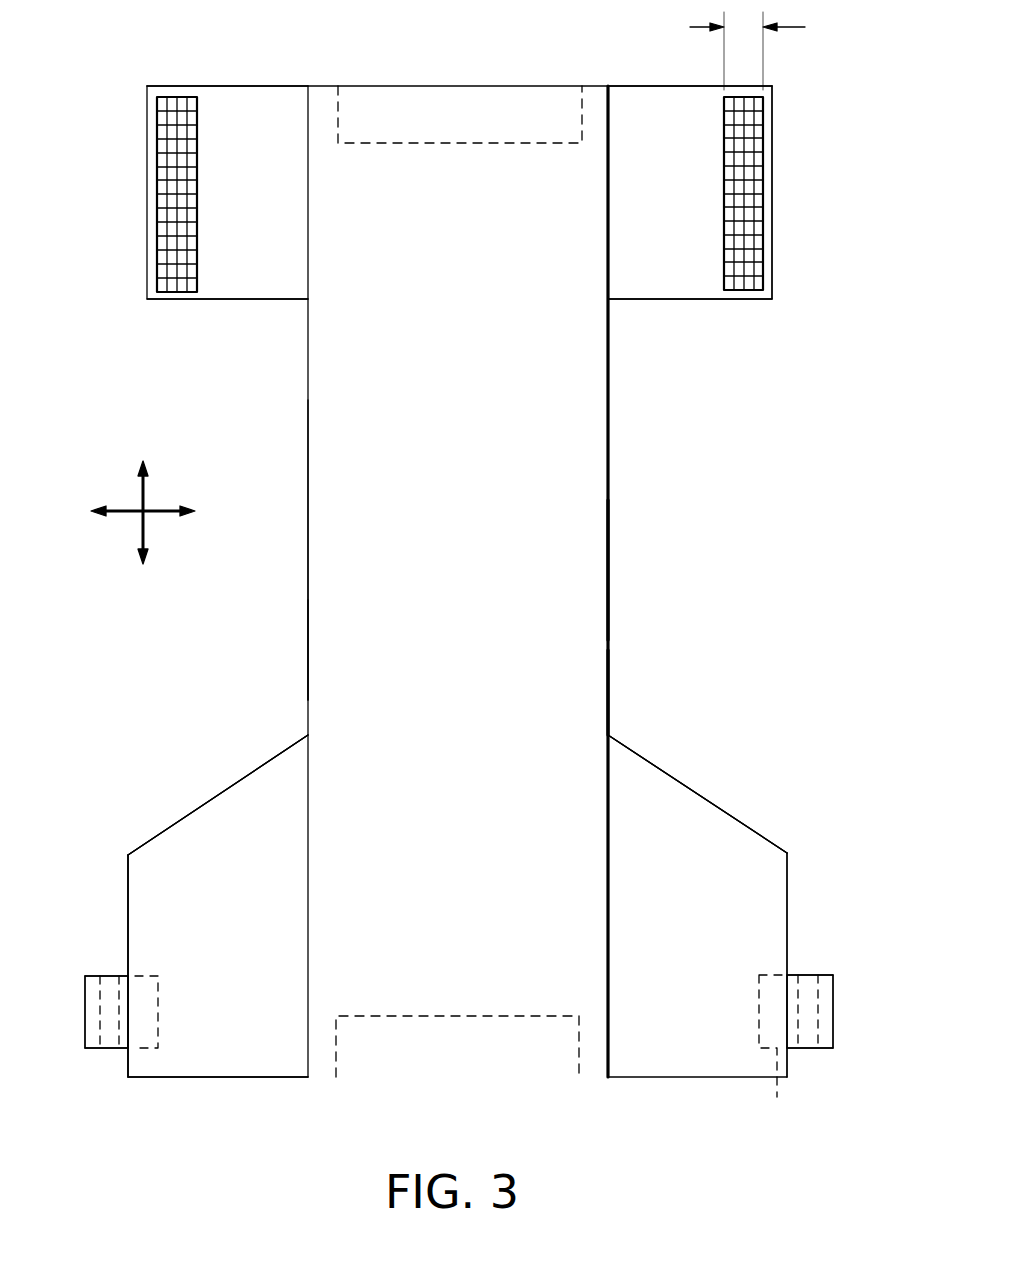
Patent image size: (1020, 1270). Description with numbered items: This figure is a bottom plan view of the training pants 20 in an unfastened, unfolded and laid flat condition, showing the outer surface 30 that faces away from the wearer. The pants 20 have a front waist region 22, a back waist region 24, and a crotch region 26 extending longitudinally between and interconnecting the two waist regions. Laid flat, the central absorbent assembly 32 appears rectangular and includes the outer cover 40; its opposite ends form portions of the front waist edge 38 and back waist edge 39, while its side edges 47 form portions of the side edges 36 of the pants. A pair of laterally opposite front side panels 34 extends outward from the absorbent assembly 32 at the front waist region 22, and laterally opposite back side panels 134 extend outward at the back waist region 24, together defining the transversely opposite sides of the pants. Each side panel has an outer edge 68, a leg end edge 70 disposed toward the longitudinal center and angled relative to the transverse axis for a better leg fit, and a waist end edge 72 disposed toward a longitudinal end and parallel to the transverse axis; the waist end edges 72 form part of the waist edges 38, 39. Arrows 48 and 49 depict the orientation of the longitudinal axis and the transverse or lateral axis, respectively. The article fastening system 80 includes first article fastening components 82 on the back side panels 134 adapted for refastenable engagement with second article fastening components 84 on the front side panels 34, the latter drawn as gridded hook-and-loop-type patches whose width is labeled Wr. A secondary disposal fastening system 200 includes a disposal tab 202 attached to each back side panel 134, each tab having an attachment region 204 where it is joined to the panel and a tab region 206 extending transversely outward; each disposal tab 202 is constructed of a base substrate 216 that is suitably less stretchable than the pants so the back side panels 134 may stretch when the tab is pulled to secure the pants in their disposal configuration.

The training pants 20 is at (318, 55).
The front waist region 22 is at (800, 280).
The back waist region 24 is at (330, 790).
The crotch region 26 is at (600, 462).
The outer surface 30 is at (596, 569).
The central absorbent assembly 32 is at (580, 708).
The front side panels 34 is at (244, 200).
The side edges 36 is at (308, 556).
The front waist edge 38 is at (462, 86).
The back waist edge 39 is at (470, 1078).
The outer cover 40 is at (325, 432).
The side edges of the absorbent assembly 47 is at (308, 654).
The longitudinal axis arrow 48 is at (140, 485).
The transverse axis arrow 49 is at (150, 515).
The outer edge 68 is at (772, 190).
The leg end edge 70 is at (235, 300).
The waist end edge 72 is at (243, 85).
The article fastening system 80 is at (705, 143).
The first article fastening components 82 is at (195, 835).
The second article fastening components 84 is at (170, 130).
The back side panels 134 is at (209, 880).
The disposal fastening system 200 is at (108, 918).
The disposal tab 202 is at (110, 976).
The attachment region 204 is at (160, 960).
The tab region 206 is at (85, 1003).
The base substrate 216 is at (93, 976).
The fastener width Wr is at (765, 51).